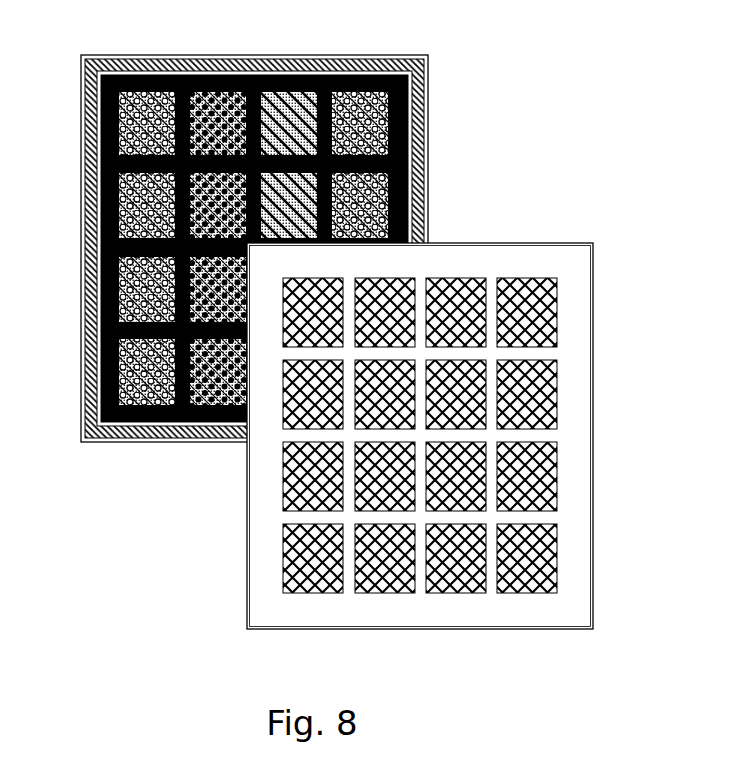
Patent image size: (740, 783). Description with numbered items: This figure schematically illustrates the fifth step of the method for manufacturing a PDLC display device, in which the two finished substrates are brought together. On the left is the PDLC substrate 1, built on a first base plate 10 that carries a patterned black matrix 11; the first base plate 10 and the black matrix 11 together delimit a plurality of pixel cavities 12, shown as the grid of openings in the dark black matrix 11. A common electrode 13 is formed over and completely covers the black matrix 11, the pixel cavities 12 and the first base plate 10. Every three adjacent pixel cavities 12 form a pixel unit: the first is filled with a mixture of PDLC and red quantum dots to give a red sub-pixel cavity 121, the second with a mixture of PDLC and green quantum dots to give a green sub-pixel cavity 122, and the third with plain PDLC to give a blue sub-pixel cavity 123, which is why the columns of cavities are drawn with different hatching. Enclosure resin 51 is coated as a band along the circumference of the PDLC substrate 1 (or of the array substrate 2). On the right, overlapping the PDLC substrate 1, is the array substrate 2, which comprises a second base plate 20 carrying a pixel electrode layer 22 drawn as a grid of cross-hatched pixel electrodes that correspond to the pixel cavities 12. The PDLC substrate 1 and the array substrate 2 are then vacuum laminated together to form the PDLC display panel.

The PDLC substrate 1 is at (80, 103).
The first base plate 10 is at (424, 62).
The black matrix 11 is at (360, 77).
The pixel cavities 12 is at (408, 140).
The common electrode 13 is at (318, 77).
The red sub-pixel cavity 121 is at (138, 77).
The green sub-pixel cavity 122 is at (208, 77).
The blue sub-pixel cavity 123 is at (273, 77).
The enclosure resin 51 is at (90, 195).
The array substrate 2 is at (593, 570).
The second base plate 20 is at (578, 437).
The pixel electrode layer 22 is at (527, 310).